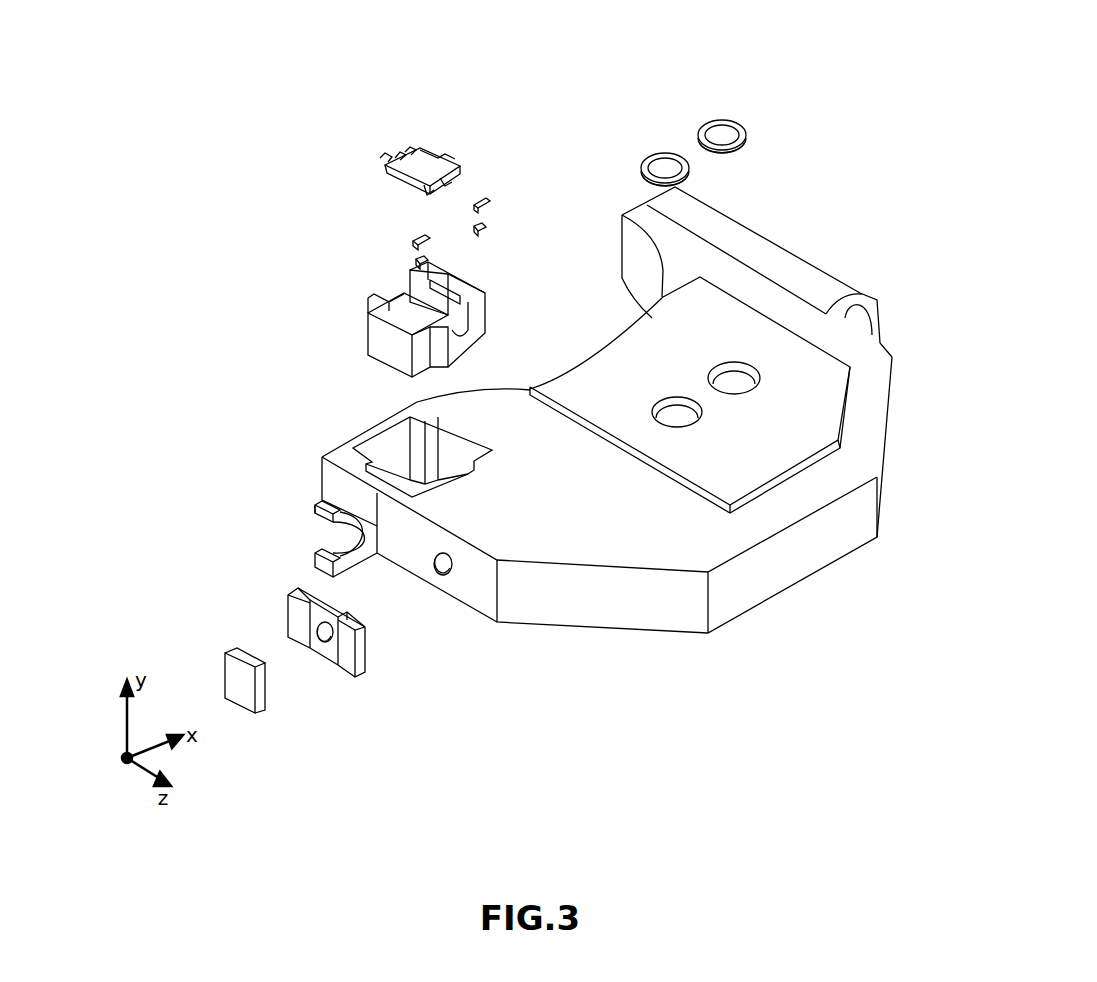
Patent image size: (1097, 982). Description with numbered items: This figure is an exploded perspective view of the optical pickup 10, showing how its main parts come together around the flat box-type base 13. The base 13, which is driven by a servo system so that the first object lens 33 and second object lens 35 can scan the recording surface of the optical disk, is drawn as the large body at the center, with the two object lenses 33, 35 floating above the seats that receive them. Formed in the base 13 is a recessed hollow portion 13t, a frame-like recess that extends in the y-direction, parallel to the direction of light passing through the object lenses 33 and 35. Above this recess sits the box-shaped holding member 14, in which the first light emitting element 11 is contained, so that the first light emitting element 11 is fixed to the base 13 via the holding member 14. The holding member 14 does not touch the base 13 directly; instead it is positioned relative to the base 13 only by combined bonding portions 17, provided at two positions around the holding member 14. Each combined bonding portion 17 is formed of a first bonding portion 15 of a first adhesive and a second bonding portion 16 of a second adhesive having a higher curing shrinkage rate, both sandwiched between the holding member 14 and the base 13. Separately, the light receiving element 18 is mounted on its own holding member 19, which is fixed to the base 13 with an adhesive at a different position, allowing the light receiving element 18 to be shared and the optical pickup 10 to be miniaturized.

The optical pickup 10 is at (710, 66).
The first light emitting element 11 is at (425, 150).
The base 13 is at (602, 606).
The recessed hollow portion 13t is at (465, 432).
The holding member 14 is at (375, 333).
The first bonding portion 15 is at (415, 264).
The second bonding portion 16 is at (413, 240).
The combined bonding portion 17 is at (334, 206).
The light receiving element 18 is at (242, 695).
The holding member 19 is at (347, 660).
The first object lens 33 is at (690, 170).
The second object lens 35 is at (746, 133).